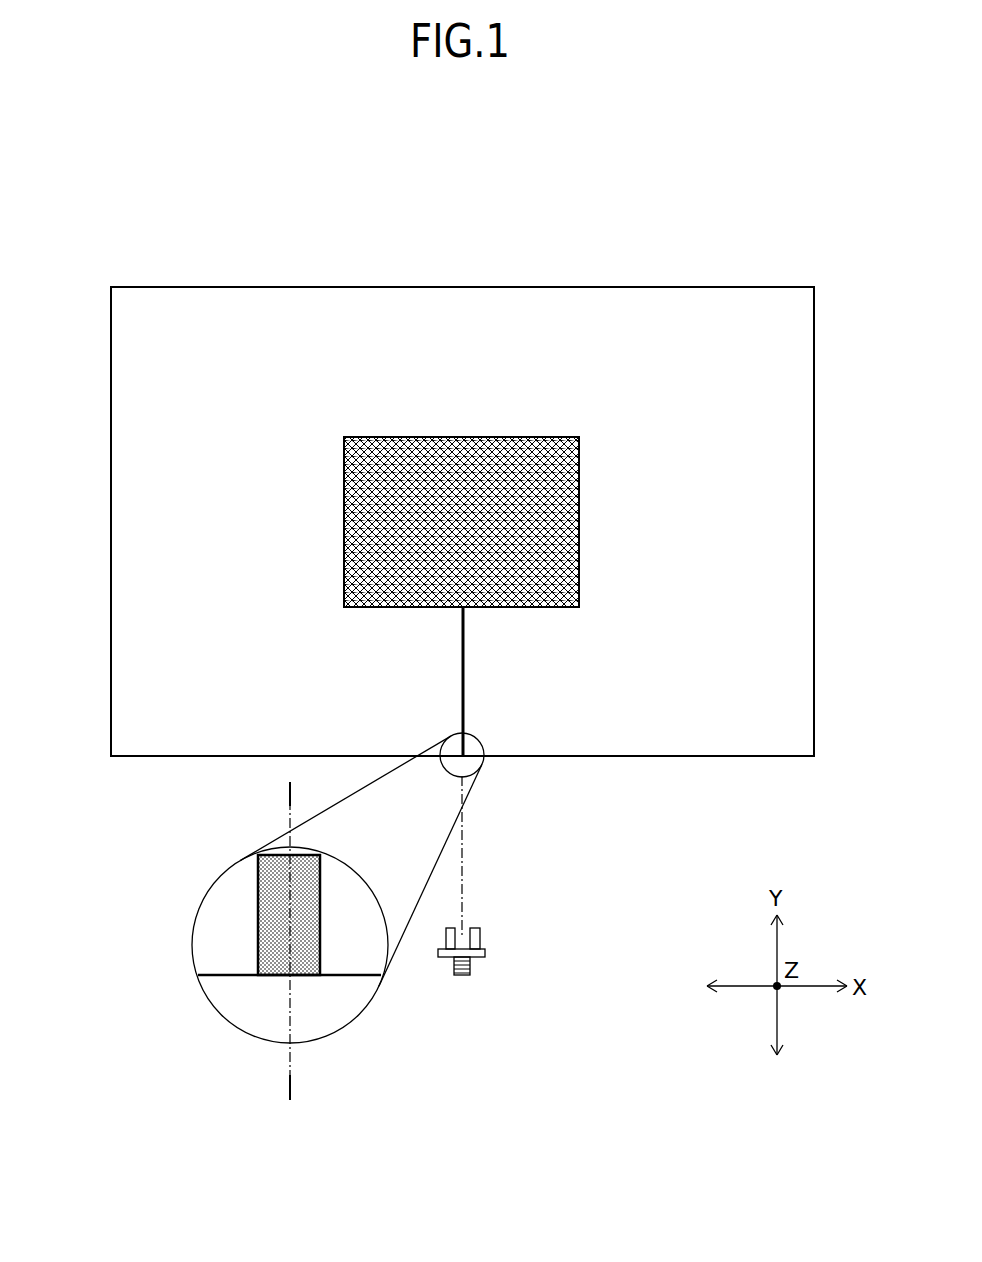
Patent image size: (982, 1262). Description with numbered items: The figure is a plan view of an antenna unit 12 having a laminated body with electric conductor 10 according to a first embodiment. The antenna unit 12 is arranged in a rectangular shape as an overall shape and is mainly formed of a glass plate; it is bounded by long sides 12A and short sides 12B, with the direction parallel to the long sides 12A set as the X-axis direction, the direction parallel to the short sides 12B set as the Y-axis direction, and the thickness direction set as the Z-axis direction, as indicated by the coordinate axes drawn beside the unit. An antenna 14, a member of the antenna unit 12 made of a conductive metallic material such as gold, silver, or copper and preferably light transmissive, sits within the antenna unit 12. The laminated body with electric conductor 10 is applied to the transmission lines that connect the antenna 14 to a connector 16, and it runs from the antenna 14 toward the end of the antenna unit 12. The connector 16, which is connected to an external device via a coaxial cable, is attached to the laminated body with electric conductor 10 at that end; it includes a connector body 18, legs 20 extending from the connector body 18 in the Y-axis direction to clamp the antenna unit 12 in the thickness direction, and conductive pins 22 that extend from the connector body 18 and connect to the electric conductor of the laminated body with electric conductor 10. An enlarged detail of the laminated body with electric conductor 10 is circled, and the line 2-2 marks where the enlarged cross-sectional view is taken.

The laminated body with electric conductor 10 is at (485, 732).
The antenna unit 12 is at (712, 247).
The long sides 12A is at (461, 287).
The short sides 12B is at (111, 520).
The antenna 14 is at (538, 437).
The connector 16 is at (494, 934).
The connector body 18 is at (472, 966).
The legs 20 is at (473, 928).
The conductive pins 22 is at (461, 940).
The line 2- 2 is at (278, 799).